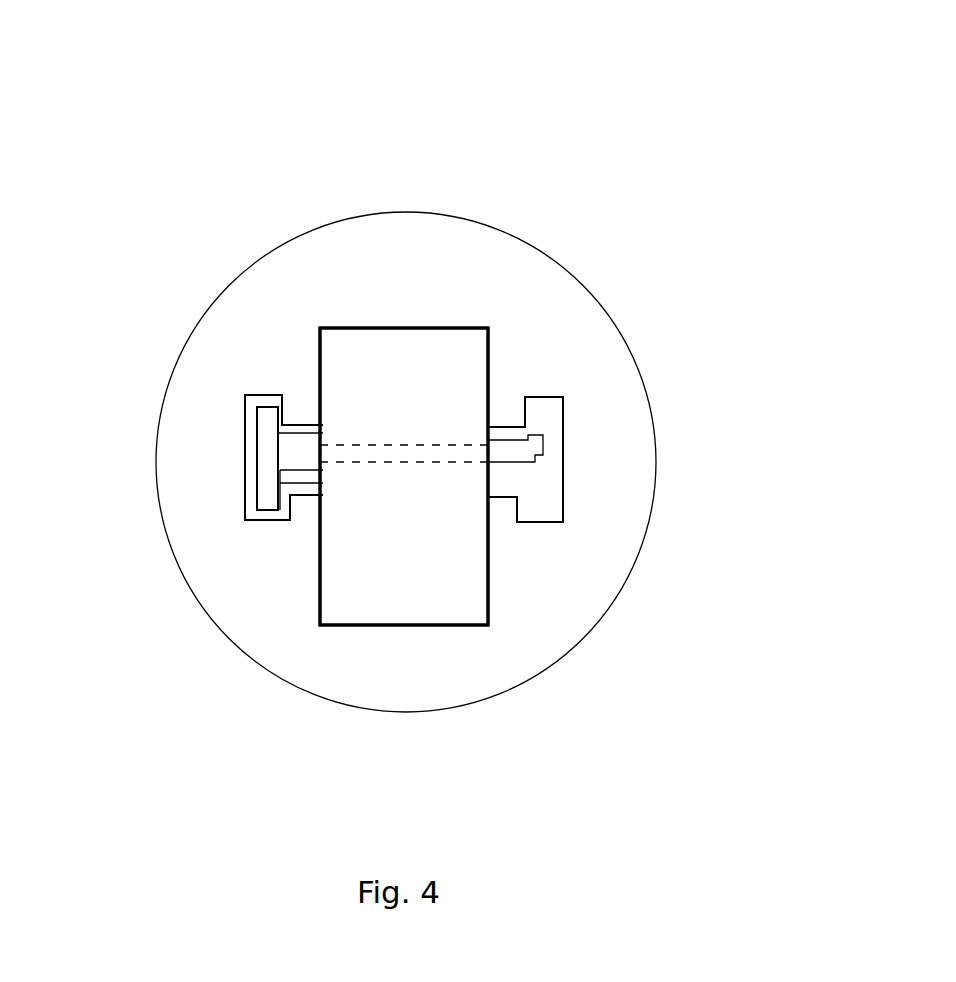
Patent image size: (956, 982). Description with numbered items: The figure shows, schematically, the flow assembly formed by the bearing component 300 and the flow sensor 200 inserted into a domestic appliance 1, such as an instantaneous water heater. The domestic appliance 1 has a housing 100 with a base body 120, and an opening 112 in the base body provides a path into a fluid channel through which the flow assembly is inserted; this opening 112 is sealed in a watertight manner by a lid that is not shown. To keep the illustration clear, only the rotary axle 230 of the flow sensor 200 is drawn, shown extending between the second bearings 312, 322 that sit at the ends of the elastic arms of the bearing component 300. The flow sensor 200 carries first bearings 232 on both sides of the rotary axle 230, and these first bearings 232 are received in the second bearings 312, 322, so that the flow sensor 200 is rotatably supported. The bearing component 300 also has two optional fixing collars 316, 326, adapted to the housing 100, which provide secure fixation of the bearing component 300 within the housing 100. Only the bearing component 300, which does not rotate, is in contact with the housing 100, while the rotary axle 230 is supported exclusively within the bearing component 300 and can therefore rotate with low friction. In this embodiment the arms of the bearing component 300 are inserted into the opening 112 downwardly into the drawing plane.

The domestic appliance 1 is at (470, 124).
The housing 100 is at (489, 462).
The base body 120 is at (617, 489).
The opening 112 is at (410, 605).
The flow sensor 200 is at (348, 402).
The rotary axle 230 is at (437, 452).
The first bearings 232 is at (298, 452).
The bearing component 300 is at (250, 421).
The second bearing 312 is at (301, 512).
The fixing collar 316 is at (262, 495).
The second bearing 322 is at (507, 508).
The fixing collar 326 is at (542, 412).